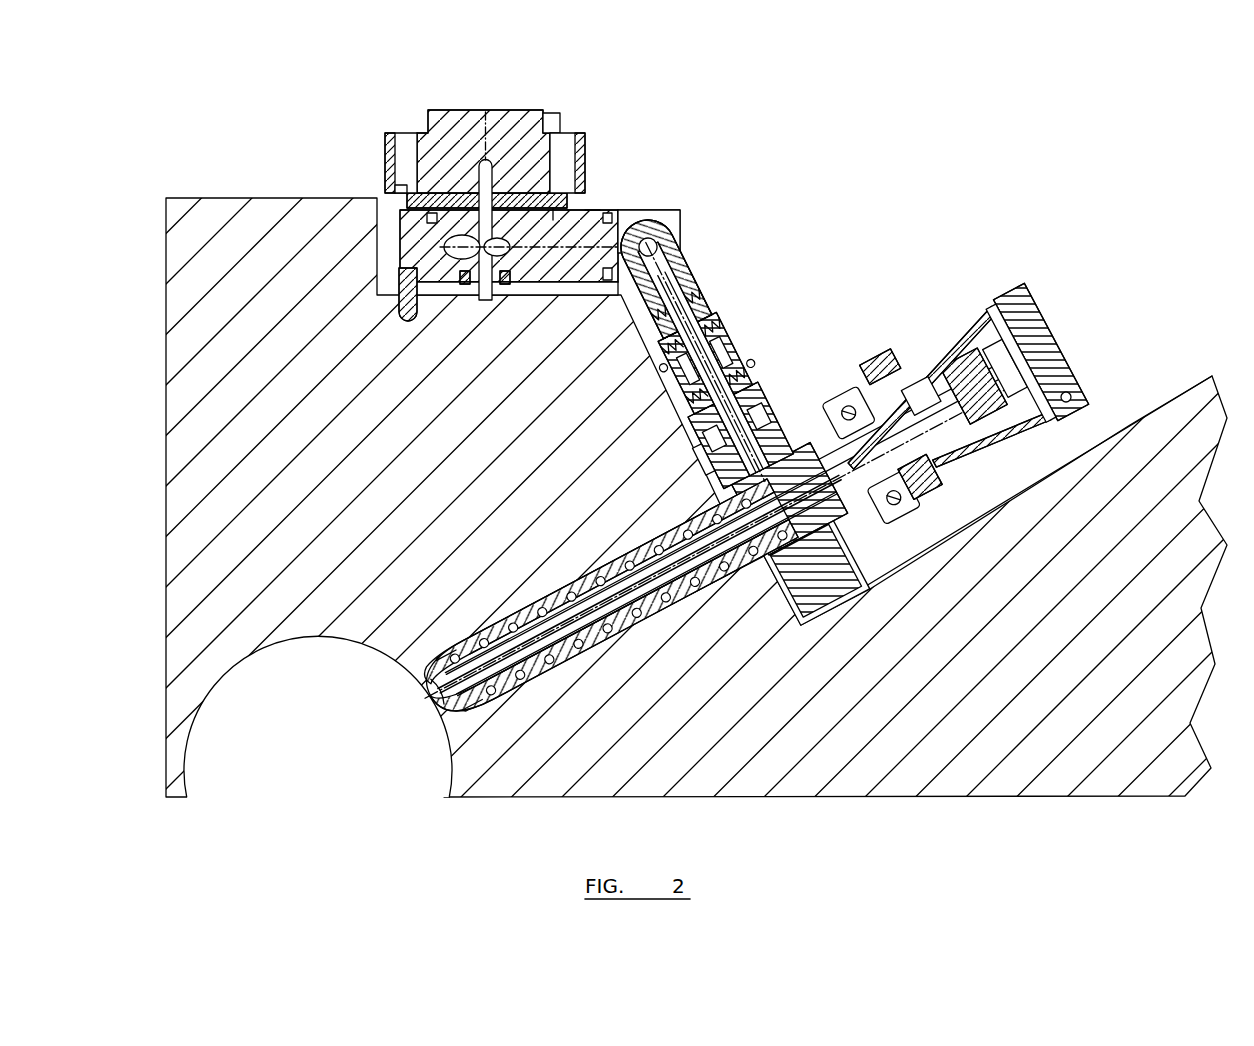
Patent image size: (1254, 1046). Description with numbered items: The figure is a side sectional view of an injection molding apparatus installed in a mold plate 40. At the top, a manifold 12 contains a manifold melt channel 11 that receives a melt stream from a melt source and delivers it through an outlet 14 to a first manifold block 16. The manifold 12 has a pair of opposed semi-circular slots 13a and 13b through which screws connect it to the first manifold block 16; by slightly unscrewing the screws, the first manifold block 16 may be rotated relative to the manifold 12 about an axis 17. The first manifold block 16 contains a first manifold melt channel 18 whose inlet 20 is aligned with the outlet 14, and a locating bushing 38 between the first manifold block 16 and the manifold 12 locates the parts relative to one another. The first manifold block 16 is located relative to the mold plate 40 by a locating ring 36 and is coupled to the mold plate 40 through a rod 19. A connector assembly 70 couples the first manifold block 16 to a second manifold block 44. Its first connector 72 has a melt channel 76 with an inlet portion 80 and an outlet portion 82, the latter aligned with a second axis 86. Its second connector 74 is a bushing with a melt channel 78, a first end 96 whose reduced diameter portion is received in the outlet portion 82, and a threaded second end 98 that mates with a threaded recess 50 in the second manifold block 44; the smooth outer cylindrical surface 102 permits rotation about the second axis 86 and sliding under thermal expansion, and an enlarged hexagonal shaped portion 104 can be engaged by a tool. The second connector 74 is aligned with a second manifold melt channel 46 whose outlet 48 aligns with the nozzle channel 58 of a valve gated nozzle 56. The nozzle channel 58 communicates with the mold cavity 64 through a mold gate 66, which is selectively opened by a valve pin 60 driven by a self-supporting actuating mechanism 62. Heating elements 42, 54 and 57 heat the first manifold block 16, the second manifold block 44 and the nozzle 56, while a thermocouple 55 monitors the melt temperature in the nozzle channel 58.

The manifold melt channel 11 is at (483, 155).
The manifold 12 is at (527, 122).
The semi-circular slot 13a is at (570, 133).
The semi-circular slot 13b is at (405, 131).
The outlet 14 is at (545, 200).
The first manifold block 16 is at (590, 230).
The axis 17 is at (488, 110).
The first manifold melt channel 18 is at (553, 220).
The rod 19 is at (405, 318).
The inlet 20 is at (425, 226).
The locating ring 36 is at (470, 300).
The locating bushing 38 is at (398, 187).
The mold plate 40 is at (170, 470).
The heating element 42 is at (580, 297).
The second manifold block 44 is at (755, 350).
The second manifold melt channel 46 is at (780, 415).
The outlet 48 is at (830, 540).
The threaded recess 50 is at (692, 383).
The heating element 54 is at (768, 386).
The thermocouple 55 is at (466, 645).
The valve gated nozzle 56 is at (638, 632).
The heating element 57 is at (540, 694).
The nozzle channel 58 is at (690, 605).
The valve pin 60 is at (590, 645).
The self-supporting actuating mechanism 62 is at (1055, 328).
The mold cavity 64 is at (383, 663).
The mold gate 66 is at (445, 735).
The connector assembly 70 is at (797, 203).
The first connector 72 is at (682, 250).
The second connector 74 is at (710, 322).
The melt channel 76 is at (692, 262).
The melt channel 78 is at (738, 332).
The inlet portion 80 is at (660, 222).
The outlet portion 82 is at (700, 278).
The second axis 86 is at (855, 595).
The first end 96 is at (682, 262).
The second end 98 is at (762, 348).
The outer cylindrical surface 102 is at (642, 333).
The enlarged hexagonal shaped portion 104 is at (656, 343).